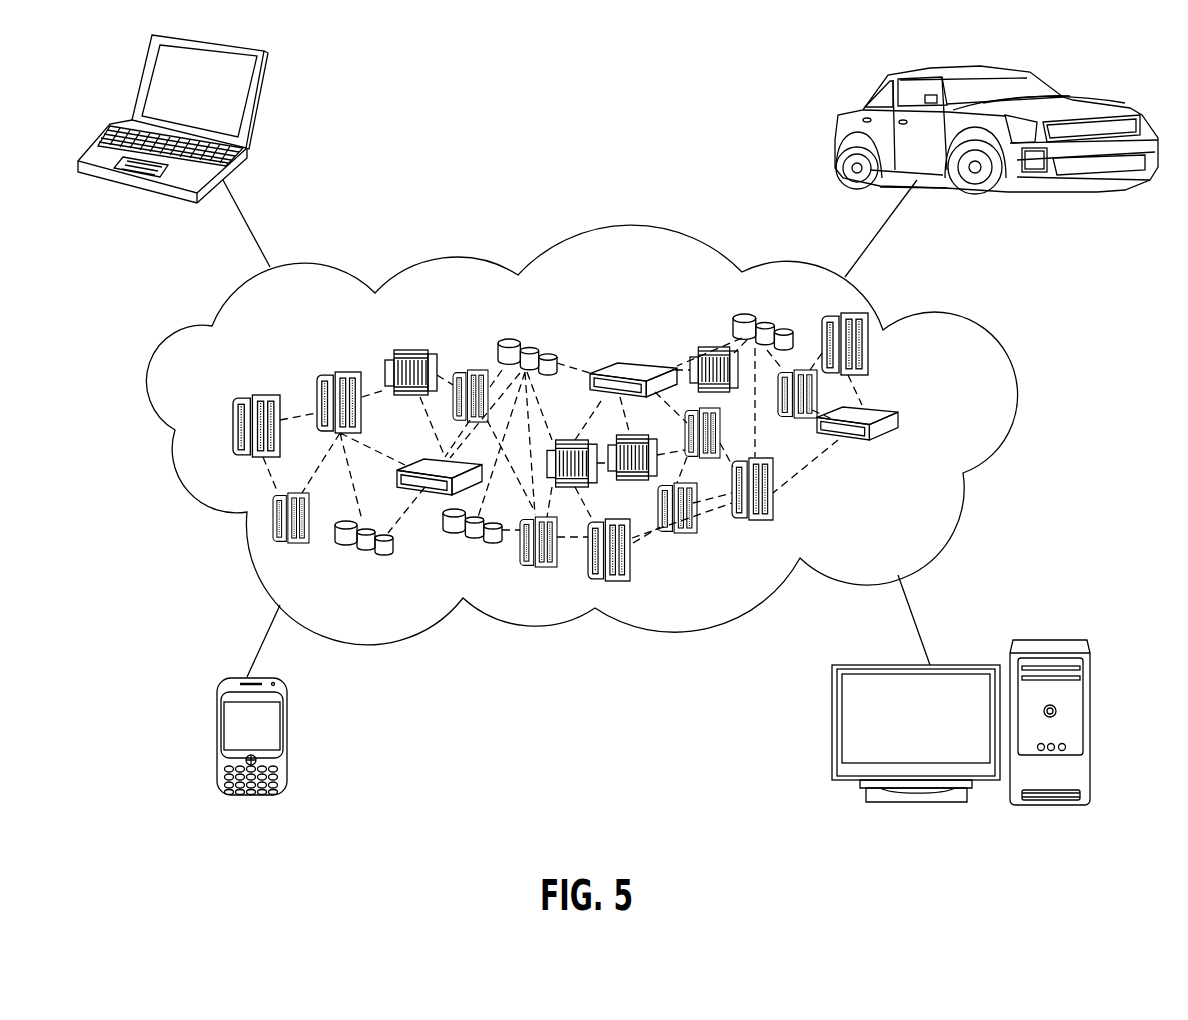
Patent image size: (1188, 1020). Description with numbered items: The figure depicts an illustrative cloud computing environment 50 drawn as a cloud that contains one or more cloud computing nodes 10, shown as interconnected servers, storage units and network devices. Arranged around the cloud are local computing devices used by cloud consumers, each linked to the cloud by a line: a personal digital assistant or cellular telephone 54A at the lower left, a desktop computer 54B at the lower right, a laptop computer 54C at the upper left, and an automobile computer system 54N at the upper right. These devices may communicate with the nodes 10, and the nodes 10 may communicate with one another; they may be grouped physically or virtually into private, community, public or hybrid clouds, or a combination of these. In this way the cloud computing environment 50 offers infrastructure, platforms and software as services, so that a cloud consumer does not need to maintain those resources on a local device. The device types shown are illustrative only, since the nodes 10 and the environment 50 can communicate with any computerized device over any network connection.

The cloud computing node 10 is at (947, 425).
The cloud computing environment 50 is at (975, 340).
The personal digital assistant (PDA) or cellular telephone 54A is at (218, 740).
The desktop computer 54B is at (1057, 638).
The laptop computer 54C is at (257, 107).
The automobile computer system 54N is at (842, 115).